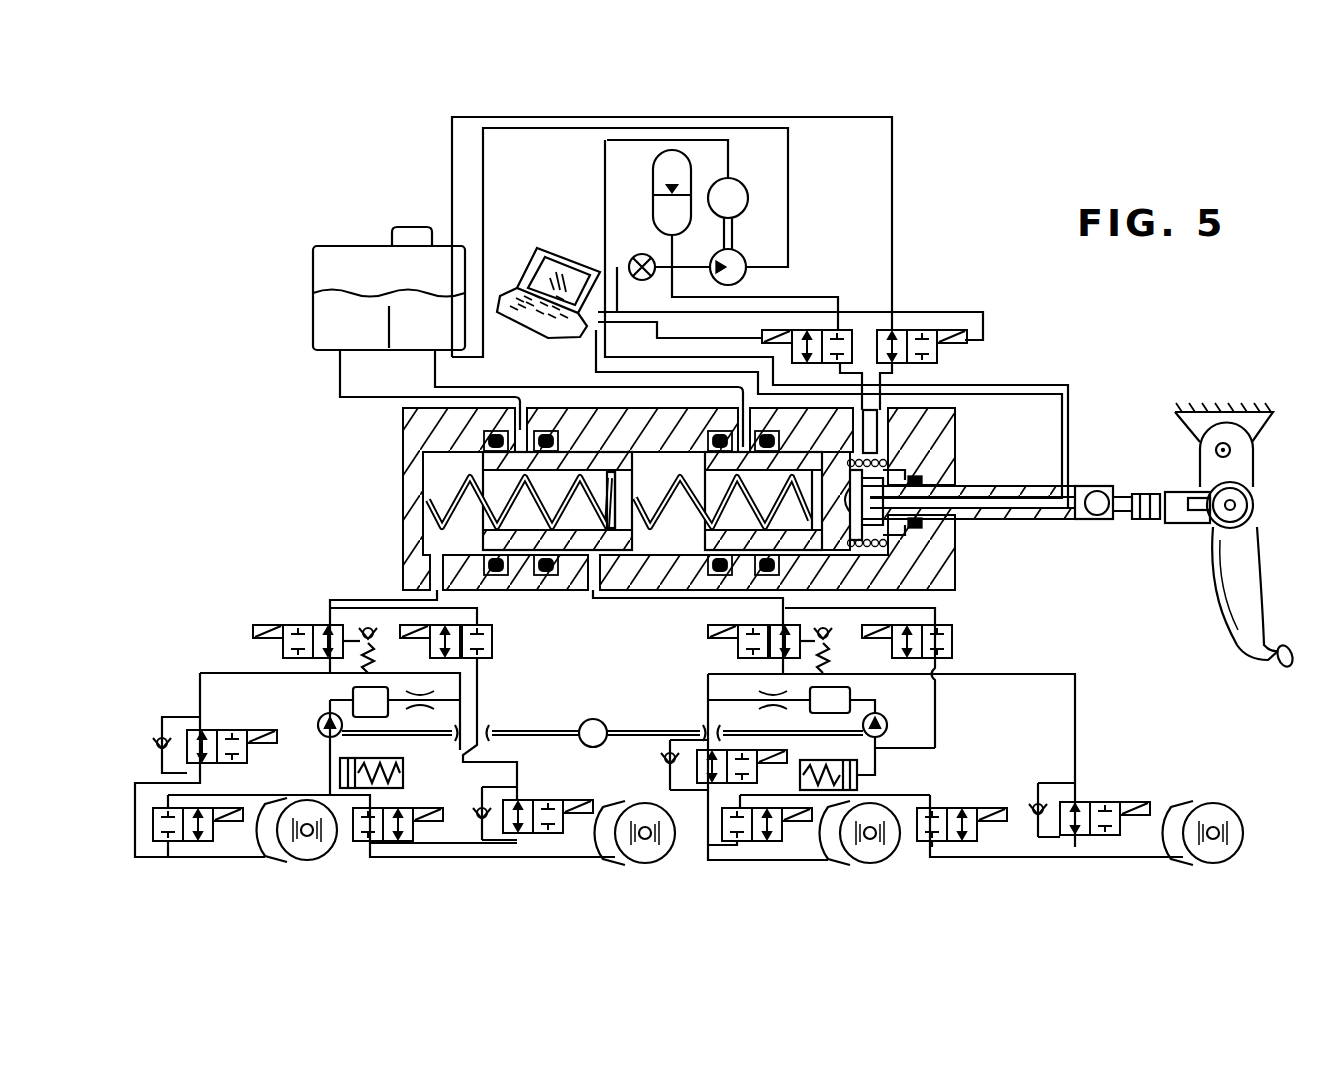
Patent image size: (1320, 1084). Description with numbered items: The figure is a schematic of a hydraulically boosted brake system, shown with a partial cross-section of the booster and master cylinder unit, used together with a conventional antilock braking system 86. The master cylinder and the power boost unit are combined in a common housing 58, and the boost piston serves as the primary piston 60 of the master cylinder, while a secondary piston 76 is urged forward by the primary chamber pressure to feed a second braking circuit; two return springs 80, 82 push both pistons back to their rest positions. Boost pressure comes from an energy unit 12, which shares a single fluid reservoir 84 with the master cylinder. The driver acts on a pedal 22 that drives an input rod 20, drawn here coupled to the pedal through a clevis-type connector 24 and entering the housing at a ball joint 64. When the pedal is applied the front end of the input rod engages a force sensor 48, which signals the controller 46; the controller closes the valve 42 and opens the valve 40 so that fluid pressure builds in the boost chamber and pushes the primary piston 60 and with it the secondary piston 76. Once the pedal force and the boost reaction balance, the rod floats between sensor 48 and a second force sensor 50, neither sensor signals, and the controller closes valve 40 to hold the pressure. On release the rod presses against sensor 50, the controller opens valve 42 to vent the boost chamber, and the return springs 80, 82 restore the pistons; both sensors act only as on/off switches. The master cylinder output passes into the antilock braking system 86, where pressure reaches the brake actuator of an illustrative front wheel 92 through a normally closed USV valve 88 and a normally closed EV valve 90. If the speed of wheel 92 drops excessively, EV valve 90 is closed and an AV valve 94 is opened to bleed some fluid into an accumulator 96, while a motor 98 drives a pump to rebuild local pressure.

The energy unit 12 is at (812, 217).
The input rod 20 is at (1030, 520).
The pedal 22 is at (1286, 648).
The clevis connector 24 is at (1143, 495).
The valve 40 is at (818, 364).
The valve 42 is at (937, 356).
The controller 46 is at (523, 290).
The force sensor 48 is at (845, 512).
The force sensor 50 is at (920, 472).
The housing 58 is at (403, 566).
The primary piston 60 is at (712, 462).
The ball joint 64 is at (1088, 492).
The secondary piston 76 is at (492, 462).
The return spring 80 is at (657, 480).
The return spring 82 is at (450, 500).
The fluid reservoir 84 is at (335, 260).
The antilock braking system 86 is at (1108, 754).
The USV valve 88 is at (293, 624).
The EV valve 90 is at (238, 730).
The front wheel 92 is at (318, 845).
The AV valve 94 is at (192, 849).
The accumulator 96 is at (403, 775).
The motor 98 is at (590, 720).